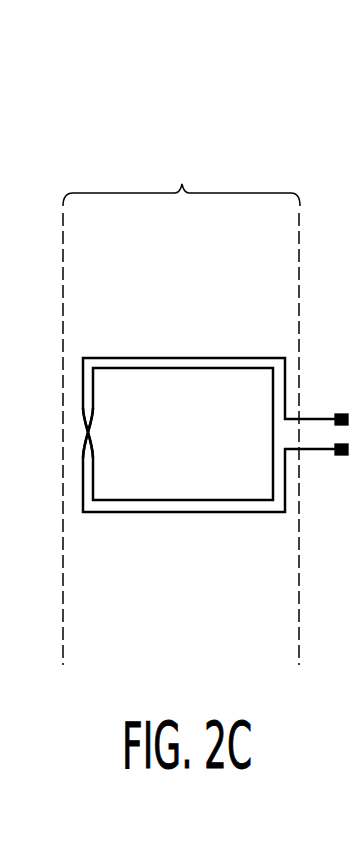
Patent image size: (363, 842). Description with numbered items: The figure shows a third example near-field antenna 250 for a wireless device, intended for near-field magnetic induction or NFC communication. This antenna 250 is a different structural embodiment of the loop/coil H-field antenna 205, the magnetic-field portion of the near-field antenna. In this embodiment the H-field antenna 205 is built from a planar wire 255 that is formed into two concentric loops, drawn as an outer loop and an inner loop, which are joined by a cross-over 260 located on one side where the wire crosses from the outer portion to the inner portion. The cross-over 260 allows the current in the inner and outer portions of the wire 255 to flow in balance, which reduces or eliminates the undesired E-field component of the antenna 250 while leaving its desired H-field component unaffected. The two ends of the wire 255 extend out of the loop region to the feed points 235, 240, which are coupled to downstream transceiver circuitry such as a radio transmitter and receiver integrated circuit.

The third example near-field antenna 250 is at (268, 150).
The loop/coil (H-field) antenna 205 is at (181, 180).
The planar wire 255 is at (177, 358).
The cross-over 260 is at (88, 433).
The feed point 235 is at (341, 413).
The feed point 240 is at (340, 456).